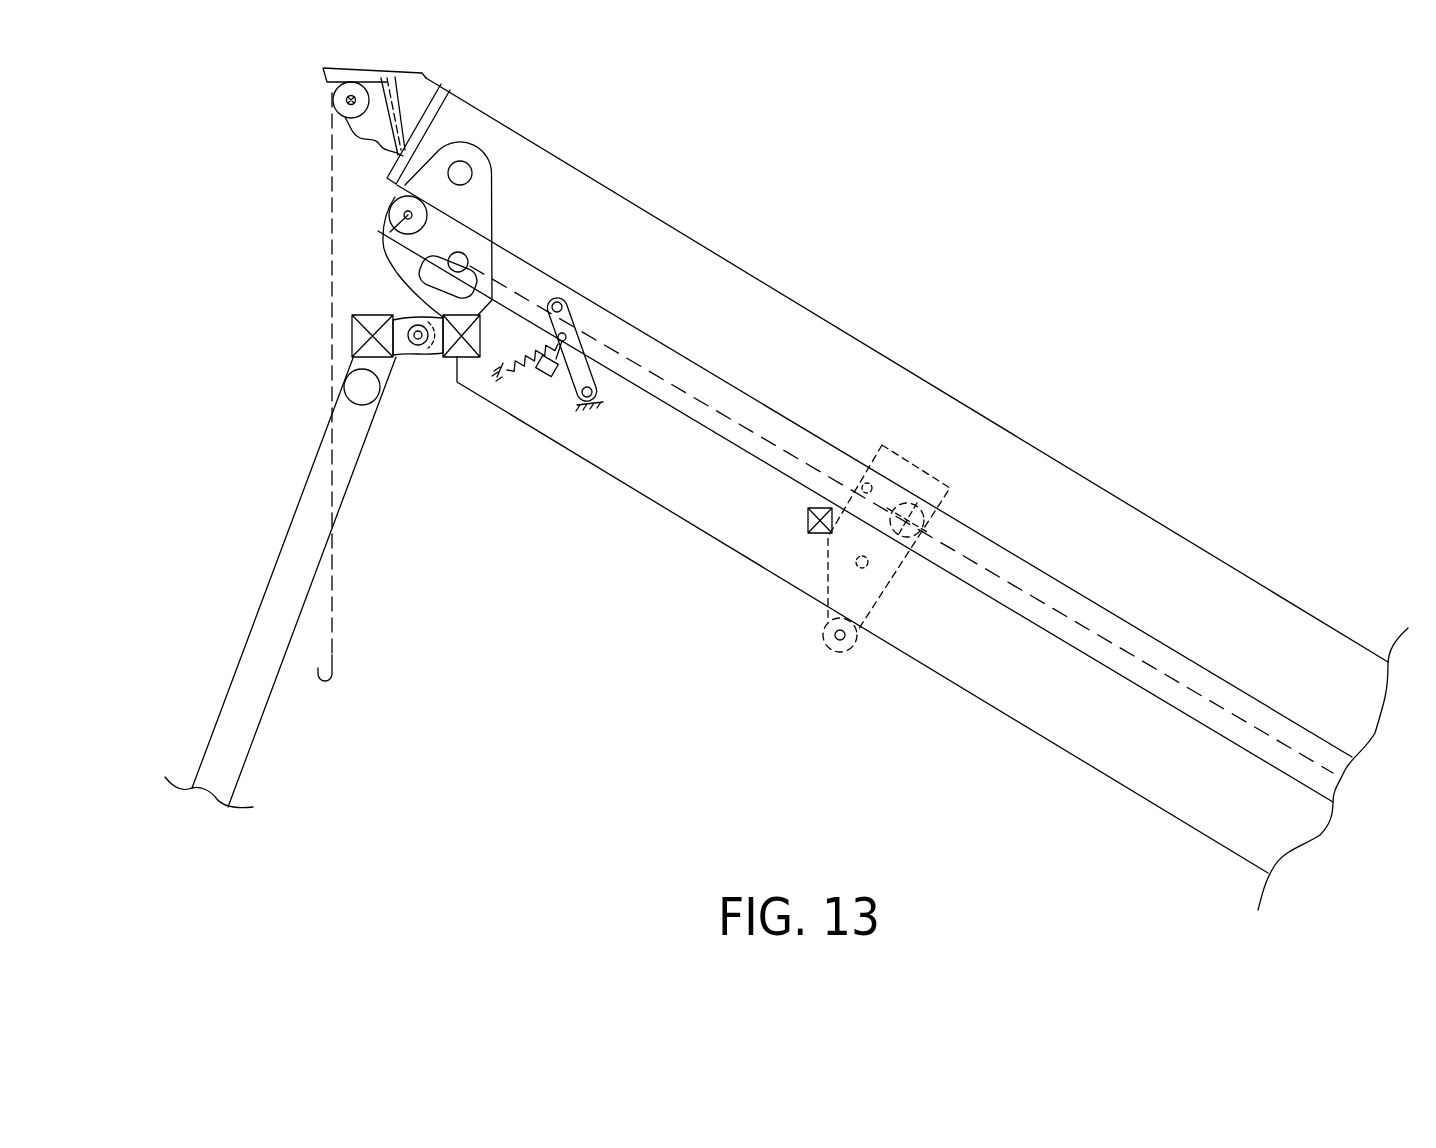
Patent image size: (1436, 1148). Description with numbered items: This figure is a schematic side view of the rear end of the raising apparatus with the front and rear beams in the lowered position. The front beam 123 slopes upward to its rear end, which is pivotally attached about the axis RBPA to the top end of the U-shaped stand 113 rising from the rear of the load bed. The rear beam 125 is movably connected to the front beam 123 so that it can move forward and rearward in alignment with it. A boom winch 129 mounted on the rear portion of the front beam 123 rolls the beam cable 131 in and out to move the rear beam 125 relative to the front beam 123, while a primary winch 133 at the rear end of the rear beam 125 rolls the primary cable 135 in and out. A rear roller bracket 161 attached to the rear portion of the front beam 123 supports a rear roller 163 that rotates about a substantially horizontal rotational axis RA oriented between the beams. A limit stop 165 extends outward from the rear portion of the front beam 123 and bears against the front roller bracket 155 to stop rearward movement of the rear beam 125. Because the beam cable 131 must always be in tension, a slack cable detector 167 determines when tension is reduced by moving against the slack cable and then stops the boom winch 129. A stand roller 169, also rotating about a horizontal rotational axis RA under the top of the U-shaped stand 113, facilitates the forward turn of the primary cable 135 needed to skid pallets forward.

The U-shaped stand 113 is at (257, 608).
The front beam 123 is at (950, 684).
The rear beam 125 is at (898, 363).
The boom winch 129 is at (470, 262).
The beam cable 131 is at (1043, 600).
The primary winch 133 is at (334, 100).
The primary cable 135 is at (332, 633).
The front roller bracket 155 is at (822, 620).
The rear roller bracket 161 is at (493, 192).
The rear roller 163 is at (389, 210).
The limit stop 165 is at (806, 521).
The slack cable detector 167 is at (563, 305).
The stand roller 169 is at (360, 388).
The rotational axis RA is at (384, 240).
The rear beam pivot axis RBPA is at (417, 348).